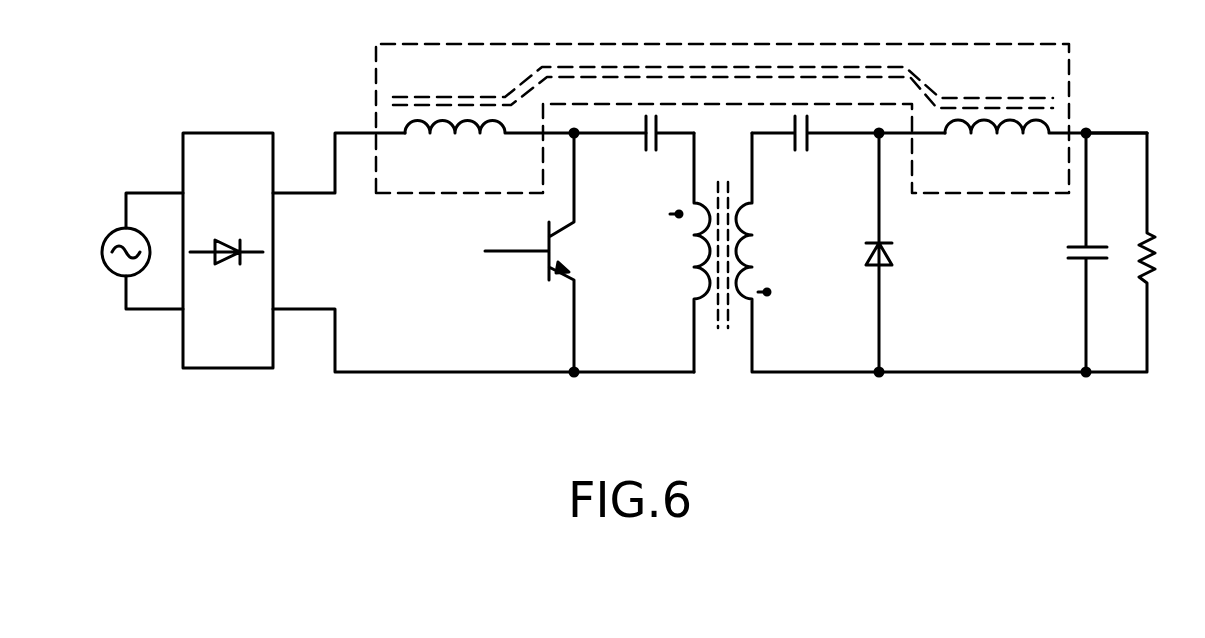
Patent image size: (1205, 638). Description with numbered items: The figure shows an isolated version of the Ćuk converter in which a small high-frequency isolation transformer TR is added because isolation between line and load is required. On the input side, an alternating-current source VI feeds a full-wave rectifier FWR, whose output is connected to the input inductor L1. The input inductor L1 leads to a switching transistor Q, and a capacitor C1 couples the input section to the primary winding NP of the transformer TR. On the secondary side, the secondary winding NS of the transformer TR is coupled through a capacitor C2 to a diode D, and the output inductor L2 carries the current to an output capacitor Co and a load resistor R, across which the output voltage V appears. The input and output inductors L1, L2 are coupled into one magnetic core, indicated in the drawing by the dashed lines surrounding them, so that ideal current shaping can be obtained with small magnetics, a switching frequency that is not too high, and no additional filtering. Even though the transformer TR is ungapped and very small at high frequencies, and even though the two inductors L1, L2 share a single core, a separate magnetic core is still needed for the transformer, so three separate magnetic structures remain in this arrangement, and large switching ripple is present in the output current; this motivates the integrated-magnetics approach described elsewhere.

The AC input voltage source VI is at (125, 251).
The full-wave rectifier FWR is at (438, 233).
The input inductor L1 is at (525, 153).
The switching transistor Q is at (542, 252).
The primary resonant capacitor C1 is at (661, 157).
The isolation transformer TR is at (865, 278).
The primary winding NP is at (677, 252).
The secondary winding NS is at (911, 252).
The secondary resonant capacitor C2 is at (848, 157).
The rectifier diode D is at (896, 252).
The output inductor L2 is at (1046, 155).
The output capacitor Co is at (1064, 252).
The load resistor R is at (1136, 252).
The output voltage V is at (1116, 117).